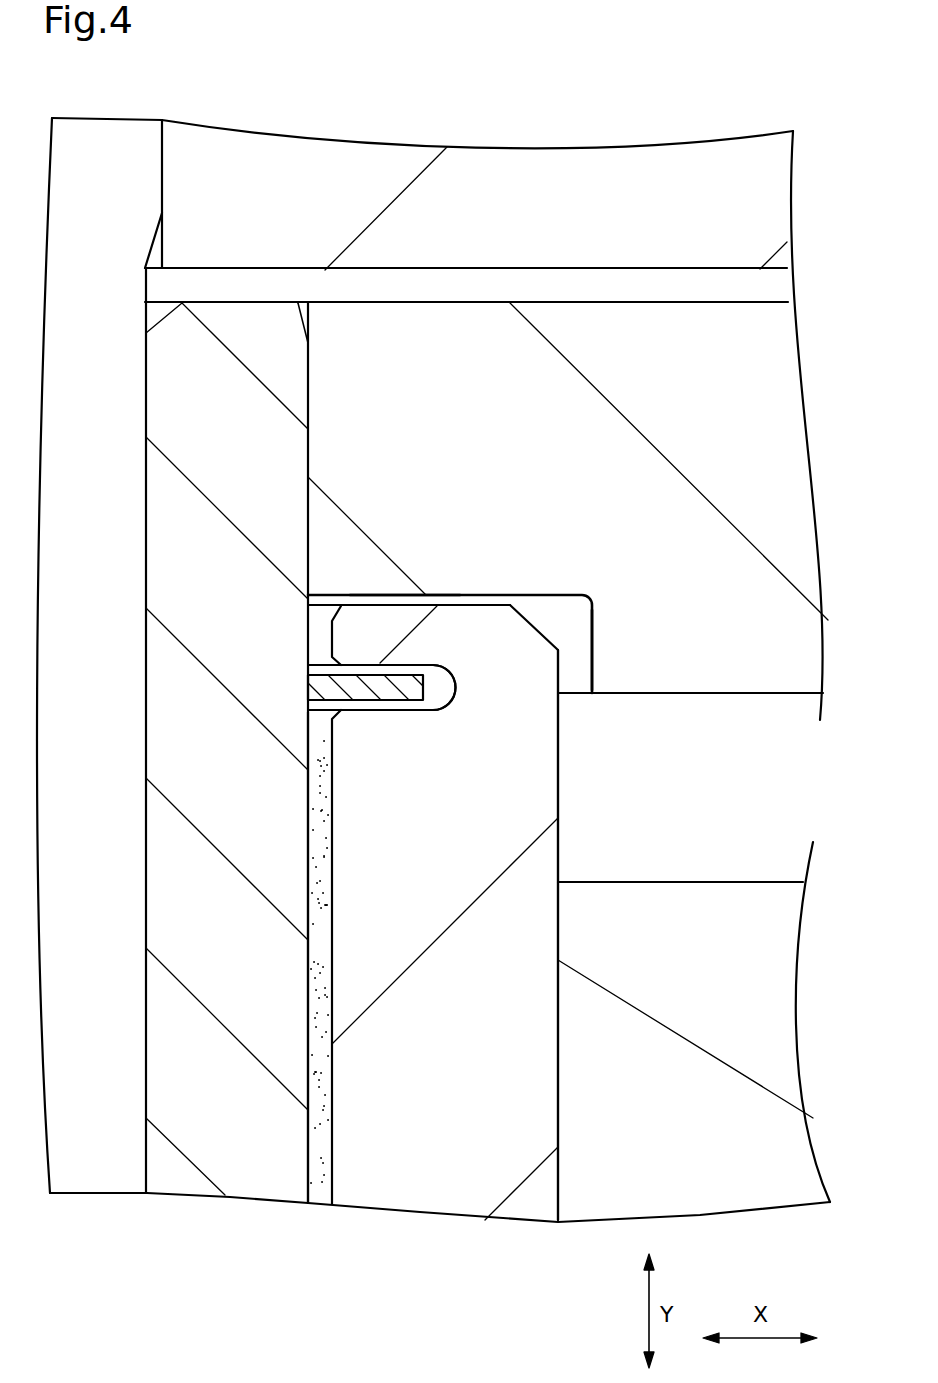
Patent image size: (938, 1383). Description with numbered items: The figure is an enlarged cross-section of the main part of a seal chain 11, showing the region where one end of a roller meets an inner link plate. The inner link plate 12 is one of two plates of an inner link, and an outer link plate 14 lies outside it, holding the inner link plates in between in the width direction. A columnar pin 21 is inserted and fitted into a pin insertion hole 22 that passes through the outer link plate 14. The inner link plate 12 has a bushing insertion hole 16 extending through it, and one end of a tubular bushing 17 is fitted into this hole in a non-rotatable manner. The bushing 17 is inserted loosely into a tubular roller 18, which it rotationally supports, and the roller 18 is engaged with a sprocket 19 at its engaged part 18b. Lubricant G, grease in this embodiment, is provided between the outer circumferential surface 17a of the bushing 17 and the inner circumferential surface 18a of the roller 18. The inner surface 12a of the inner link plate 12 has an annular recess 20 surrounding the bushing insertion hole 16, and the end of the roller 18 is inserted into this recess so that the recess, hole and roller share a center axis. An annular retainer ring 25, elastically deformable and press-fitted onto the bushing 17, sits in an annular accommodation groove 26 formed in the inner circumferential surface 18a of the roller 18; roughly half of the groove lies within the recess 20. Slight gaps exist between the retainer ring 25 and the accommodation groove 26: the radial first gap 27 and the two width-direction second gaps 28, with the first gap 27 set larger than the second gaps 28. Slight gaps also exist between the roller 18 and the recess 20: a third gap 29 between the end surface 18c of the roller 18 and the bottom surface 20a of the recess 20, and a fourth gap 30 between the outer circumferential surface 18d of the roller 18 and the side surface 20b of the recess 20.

The seal chain 11 is at (745, 82).
The inner link plate 12 is at (777, 335).
The inner surface 12a is at (747, 700).
The outer link plate 14 is at (598, 150).
The bushing insertion hole 16 is at (308, 377).
The bushing 17 is at (158, 880).
The outer circumferential surface 17a is at (312, 864).
The roller 18 is at (558, 797).
The inner circumferential surface 18a is at (324, 912).
The engaged part 18b is at (543, 1082).
The end surface 18c is at (480, 605).
The outer circumferential surface 18d is at (558, 731).
The sprocket 19 is at (745, 882).
The recess 20 is at (552, 602).
The bottom surface 20a is at (398, 606).
The side surface 20b is at (584, 626).
The pin 21 is at (104, 130).
The pin insertion hole 22 is at (160, 172).
The retainer ring 25 is at (363, 702).
The accommodation groove 26 is at (437, 706).
The first gap 27 is at (458, 681).
The second gap 28 is at (362, 664).
The third gap 29 is at (448, 594).
The fourth gap 30 is at (595, 663).
The lubricant G is at (320, 1070).